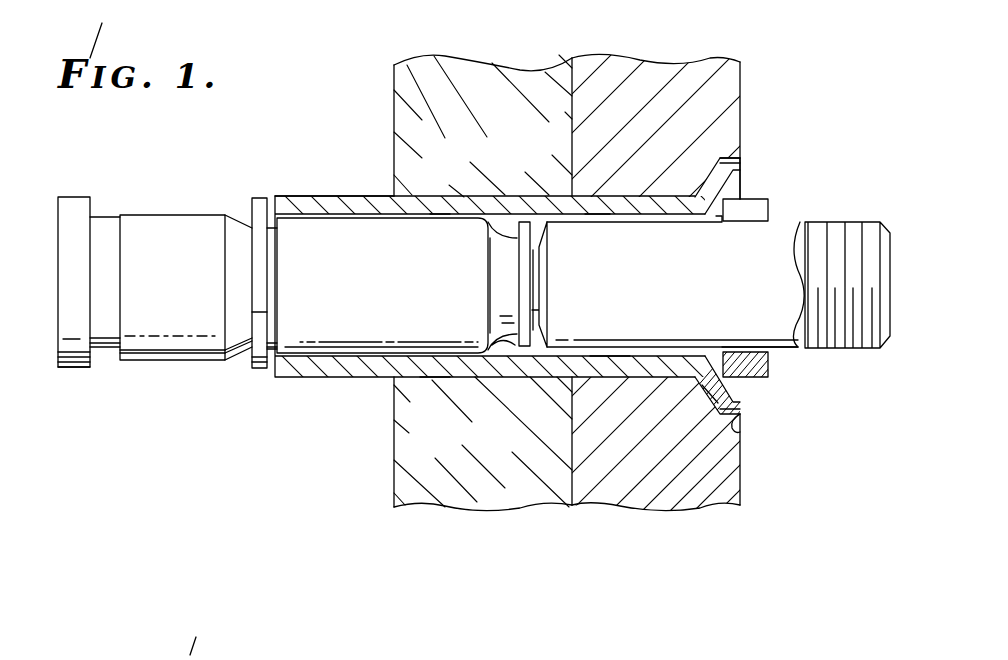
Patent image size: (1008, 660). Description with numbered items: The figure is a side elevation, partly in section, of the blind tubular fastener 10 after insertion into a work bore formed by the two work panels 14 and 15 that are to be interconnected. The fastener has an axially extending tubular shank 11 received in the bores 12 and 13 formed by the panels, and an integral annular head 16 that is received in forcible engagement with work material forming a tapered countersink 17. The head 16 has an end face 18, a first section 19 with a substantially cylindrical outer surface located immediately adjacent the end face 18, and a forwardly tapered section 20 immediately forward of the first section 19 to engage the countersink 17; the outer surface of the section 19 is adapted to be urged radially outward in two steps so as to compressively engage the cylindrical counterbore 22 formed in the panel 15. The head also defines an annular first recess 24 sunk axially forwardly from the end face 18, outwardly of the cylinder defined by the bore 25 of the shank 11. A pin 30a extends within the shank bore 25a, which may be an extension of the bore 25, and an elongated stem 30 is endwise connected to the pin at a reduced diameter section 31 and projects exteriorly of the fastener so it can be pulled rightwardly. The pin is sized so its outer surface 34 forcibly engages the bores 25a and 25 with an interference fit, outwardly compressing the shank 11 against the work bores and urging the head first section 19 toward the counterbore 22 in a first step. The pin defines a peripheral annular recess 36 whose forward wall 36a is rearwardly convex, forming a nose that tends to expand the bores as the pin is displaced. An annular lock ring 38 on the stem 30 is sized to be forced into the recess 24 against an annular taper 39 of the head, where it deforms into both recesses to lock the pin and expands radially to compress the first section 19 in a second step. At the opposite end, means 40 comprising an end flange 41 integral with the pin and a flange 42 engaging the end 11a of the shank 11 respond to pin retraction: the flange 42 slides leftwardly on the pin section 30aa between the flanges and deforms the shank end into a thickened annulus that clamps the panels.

The tubular fastener 10 is at (312, 180).
The tubular shank 11 is at (355, 196).
The end of the tubular shank 11a is at (252, 200).
The bore 12 is at (595, 197).
The bore 13 is at (438, 197).
The work panel 14 is at (424, 62).
The panel or skin 15 is at (637, 62).
The annular head 16 is at (746, 168).
The tapered countersink 17 is at (742, 400).
The end face 18 is at (740, 172).
The first section 19 is at (742, 426).
The forwardly tapered section 20 is at (712, 402).
The cylindrical counterbore 22 is at (712, 190).
The first recess 24 is at (718, 224).
The bore of the tubular shank 25 is at (607, 350).
The tubular shank bore 25a is at (337, 352).
The stem 30 is at (864, 216).
The pin 30a is at (382, 285).
The pin section 30aa is at (184, 284).
The reduced diameter section 31 is at (541, 285).
The outer surface of the pin 34 is at (436, 368).
The peripheral annular recess 36 is at (508, 340).
The forward wall 36a is at (502, 212).
The lock ring 38 is at (770, 366).
The annular taper 39 is at (712, 340).
The means responsive to pin retraction 40 is at (125, 380).
The end flange 41 is at (71, 200).
The flange 42 is at (263, 311).